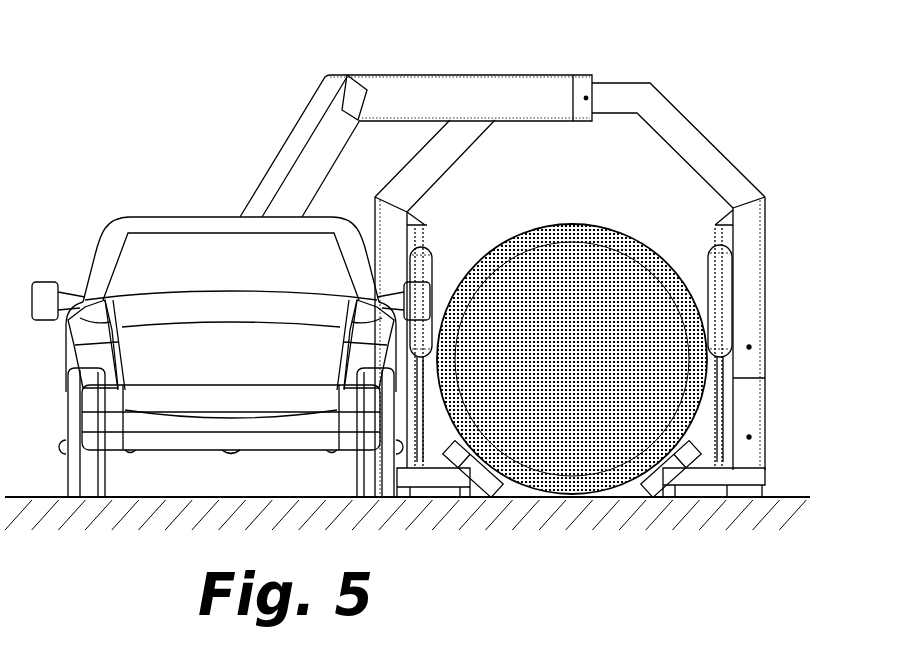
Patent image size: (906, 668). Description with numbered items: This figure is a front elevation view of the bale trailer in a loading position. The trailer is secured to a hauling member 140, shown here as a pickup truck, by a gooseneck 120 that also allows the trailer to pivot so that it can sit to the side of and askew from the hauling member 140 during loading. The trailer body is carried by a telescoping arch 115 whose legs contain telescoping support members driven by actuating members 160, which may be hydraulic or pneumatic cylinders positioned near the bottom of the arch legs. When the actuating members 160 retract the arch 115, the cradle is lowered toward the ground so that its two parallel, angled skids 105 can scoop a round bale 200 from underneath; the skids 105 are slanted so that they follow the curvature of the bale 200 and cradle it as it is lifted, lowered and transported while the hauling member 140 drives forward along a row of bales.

The skid 105 is at (485, 490).
The arch 115 is at (700, 132).
The gooseneck 120 is at (415, 106).
The hauling member 140 is at (243, 380).
The actuating member 160 is at (718, 298).
The bale 200 is at (587, 371).